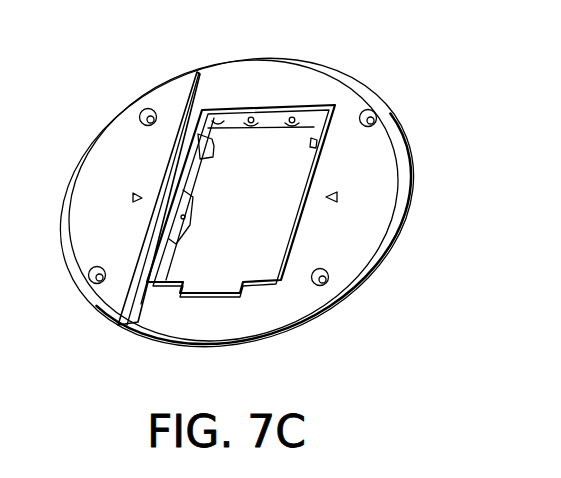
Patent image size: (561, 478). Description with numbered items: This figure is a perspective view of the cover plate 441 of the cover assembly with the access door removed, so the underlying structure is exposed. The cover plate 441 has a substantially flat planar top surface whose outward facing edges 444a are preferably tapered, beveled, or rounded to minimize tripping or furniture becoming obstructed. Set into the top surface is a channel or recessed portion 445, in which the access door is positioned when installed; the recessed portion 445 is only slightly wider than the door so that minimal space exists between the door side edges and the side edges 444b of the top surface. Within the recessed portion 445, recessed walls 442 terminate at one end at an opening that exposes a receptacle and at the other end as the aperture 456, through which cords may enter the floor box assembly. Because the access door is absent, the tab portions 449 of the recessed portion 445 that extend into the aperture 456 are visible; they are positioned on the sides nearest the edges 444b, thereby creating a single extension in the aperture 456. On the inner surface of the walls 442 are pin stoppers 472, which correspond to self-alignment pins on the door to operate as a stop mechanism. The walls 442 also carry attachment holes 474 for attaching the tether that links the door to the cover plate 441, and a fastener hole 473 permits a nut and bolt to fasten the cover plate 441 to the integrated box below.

The cover plate 441 is at (382, 158).
The recessed walls 442 is at (196, 105).
The outward facing edges 444a is at (377, 242).
The side edges 444b is at (112, 327).
The recessed portion 445 is at (153, 318).
The tab portions 449 is at (262, 292).
The aperture 456 is at (262, 197).
The pin stoppers 472 is at (203, 153).
The fastener hole 473 is at (185, 219).
The attachment holes 474 is at (252, 120).